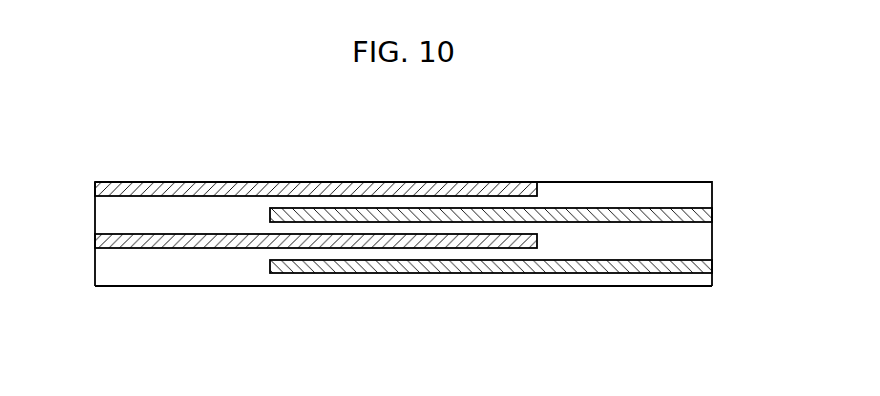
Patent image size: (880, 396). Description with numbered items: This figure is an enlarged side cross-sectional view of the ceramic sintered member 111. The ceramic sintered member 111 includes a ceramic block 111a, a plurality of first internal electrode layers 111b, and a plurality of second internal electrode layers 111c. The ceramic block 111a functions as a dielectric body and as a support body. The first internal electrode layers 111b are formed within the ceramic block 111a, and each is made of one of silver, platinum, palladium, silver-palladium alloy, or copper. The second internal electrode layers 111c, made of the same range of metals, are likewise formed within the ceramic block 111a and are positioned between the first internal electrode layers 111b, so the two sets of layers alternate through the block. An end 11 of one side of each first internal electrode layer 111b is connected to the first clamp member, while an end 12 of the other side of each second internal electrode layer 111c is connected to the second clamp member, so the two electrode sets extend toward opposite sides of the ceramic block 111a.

The end of one side of the first internal electrode layers 11 is at (712, 213).
The end of another side of the second internal electrode layers 12 is at (95, 184).
The ceramic sintered member 111 is at (296, 150).
The ceramic block 111a is at (603, 190).
The first internal electrode layers 111b is at (631, 213).
The second internal electrode layers 111c is at (205, 190).